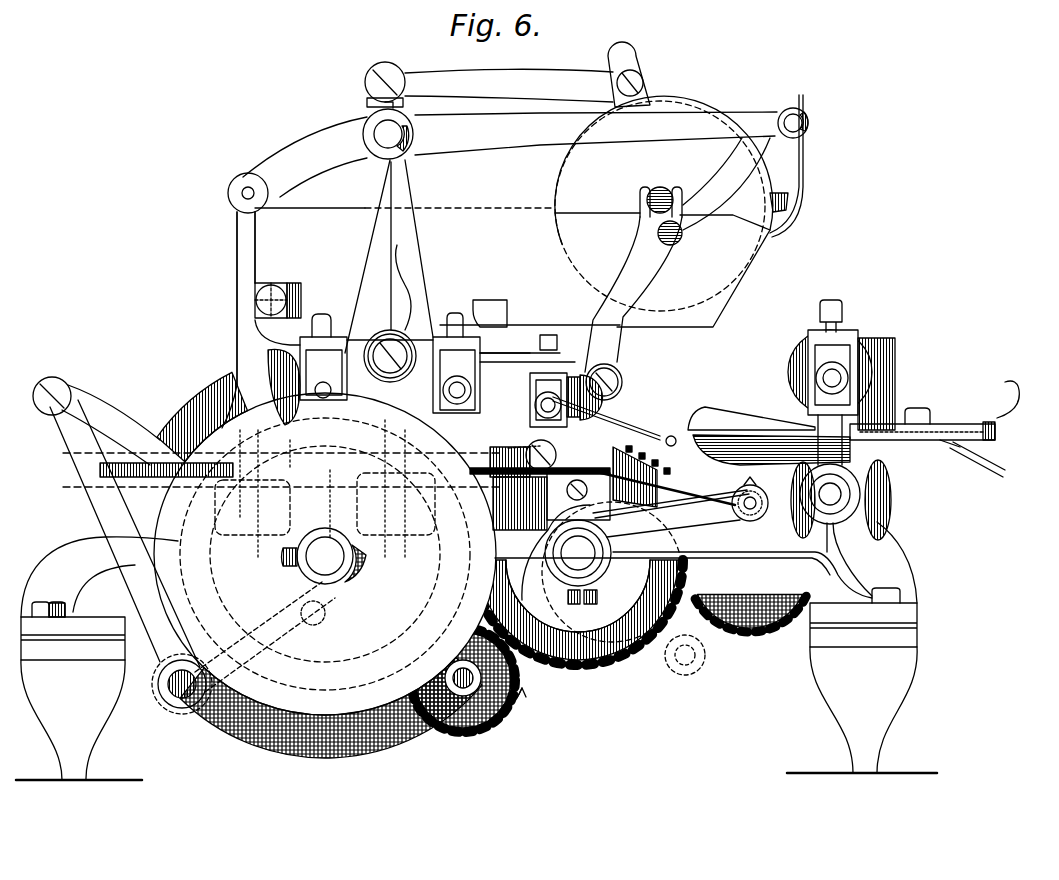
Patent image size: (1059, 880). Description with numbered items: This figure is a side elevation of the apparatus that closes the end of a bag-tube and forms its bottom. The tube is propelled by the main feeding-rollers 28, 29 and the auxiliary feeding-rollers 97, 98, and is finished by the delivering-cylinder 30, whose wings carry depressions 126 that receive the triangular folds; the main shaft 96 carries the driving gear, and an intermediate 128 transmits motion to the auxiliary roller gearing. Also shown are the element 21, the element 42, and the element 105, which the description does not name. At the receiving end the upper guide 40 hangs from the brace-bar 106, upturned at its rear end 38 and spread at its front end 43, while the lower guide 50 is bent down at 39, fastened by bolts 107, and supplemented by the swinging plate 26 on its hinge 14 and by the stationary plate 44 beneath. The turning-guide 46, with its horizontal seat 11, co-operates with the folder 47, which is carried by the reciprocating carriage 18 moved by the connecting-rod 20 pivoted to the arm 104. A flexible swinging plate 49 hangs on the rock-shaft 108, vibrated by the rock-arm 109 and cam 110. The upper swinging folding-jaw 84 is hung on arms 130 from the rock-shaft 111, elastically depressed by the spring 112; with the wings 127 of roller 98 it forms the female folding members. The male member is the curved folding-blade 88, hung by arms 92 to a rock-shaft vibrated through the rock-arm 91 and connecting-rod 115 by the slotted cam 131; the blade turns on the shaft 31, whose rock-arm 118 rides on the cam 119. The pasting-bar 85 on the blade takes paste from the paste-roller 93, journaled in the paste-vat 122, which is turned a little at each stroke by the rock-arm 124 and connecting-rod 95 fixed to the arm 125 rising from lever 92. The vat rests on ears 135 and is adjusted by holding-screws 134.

The horizontal seat 11 is at (522, 437).
The hinge 14 is at (676, 440).
The reciprocating carriage 18 is at (536, 460).
The connecting-rod 20 is at (96, 421).
The wheel 21 is at (325, 554).
The swinging plate 26 is at (662, 431).
The main feeding-roller 28 is at (814, 382).
The main feeding-roller 29 is at (890, 504).
The finishing delivering-cylinder 30 is at (268, 390).
The shaft 31 is at (793, 107).
The upturned rear end 38 is at (1020, 400).
The downward bend 39 is at (998, 457).
The upper guide 40 is at (988, 419).
The slide bar 42 is at (996, 432).
The upturned front sides 43 is at (751, 416).
The stationary plate 44 is at (771, 450).
The turning-guide 46 is at (507, 437).
The folder 47 is at (605, 431).
The flexible swinging plate 49 is at (686, 492).
The lower guide 50 is at (955, 450).
The upper swinging folding-jaw 84 is at (622, 383).
The pasting-bar 85 is at (779, 202).
The folding-blade 88 is at (803, 190).
The rock-arm 91 is at (297, 165).
The arm 92 is at (596, 133).
The paste-roller 93 is at (664, 211).
The connecting-rod 95 is at (509, 85).
The main shaft 96 is at (324, 556).
The auxiliary feeding-roller 97 is at (592, 400).
The auxiliary feeding-roller 98 is at (578, 585).
The arm 104 is at (128, 554).
The link 105 is at (243, 648).
The brace-bar 106 is at (892, 352).
The bolt 107 is at (926, 412).
The rock-shaft 108 is at (750, 499).
The rock-arm 109 is at (668, 504).
The cam 110 is at (578, 573).
The rock-shaft 111 is at (390, 356).
The spring 112 is at (401, 300).
The connecting-rod 115 is at (243, 298).
The rock-arm 118 is at (705, 191).
The cam 119 is at (633, 294).
The paste-vat 122 is at (424, 256).
The rock-arm 124 is at (629, 74).
The arm 125 is at (396, 104).
The depression 126 is at (388, 134).
The wing 127 is at (463, 672).
The intermediate 128 is at (480, 722).
The arm 130 is at (520, 340).
The slotted cam 131 is at (338, 748).
The holding-screw 134 is at (271, 286).
The ear 135 is at (289, 292).